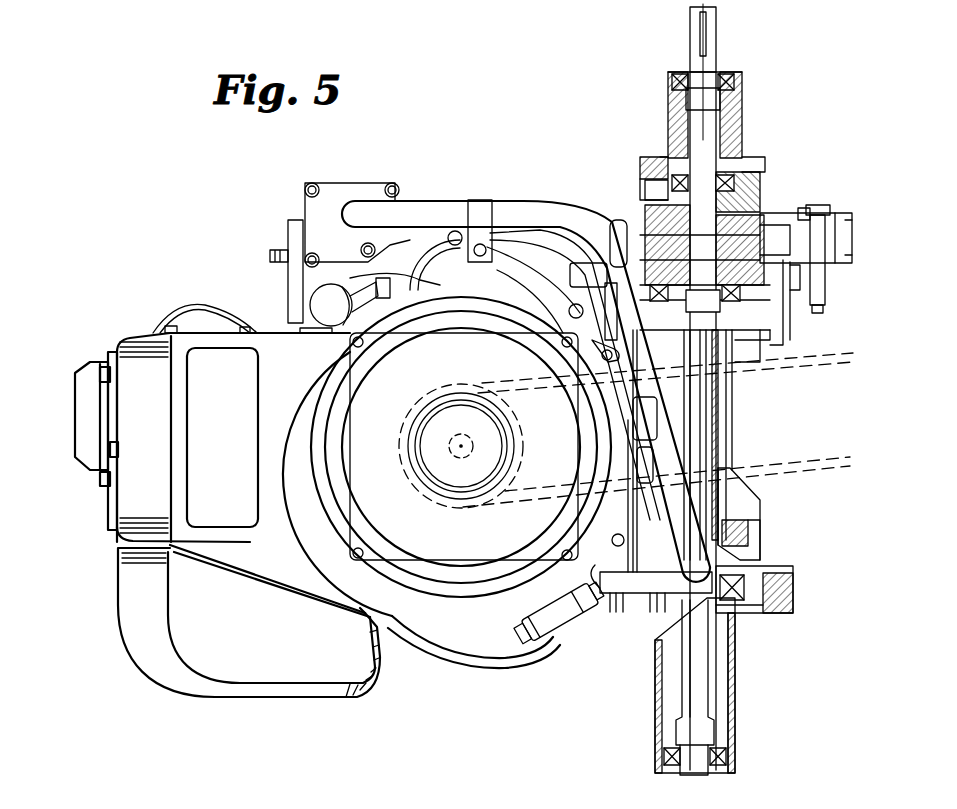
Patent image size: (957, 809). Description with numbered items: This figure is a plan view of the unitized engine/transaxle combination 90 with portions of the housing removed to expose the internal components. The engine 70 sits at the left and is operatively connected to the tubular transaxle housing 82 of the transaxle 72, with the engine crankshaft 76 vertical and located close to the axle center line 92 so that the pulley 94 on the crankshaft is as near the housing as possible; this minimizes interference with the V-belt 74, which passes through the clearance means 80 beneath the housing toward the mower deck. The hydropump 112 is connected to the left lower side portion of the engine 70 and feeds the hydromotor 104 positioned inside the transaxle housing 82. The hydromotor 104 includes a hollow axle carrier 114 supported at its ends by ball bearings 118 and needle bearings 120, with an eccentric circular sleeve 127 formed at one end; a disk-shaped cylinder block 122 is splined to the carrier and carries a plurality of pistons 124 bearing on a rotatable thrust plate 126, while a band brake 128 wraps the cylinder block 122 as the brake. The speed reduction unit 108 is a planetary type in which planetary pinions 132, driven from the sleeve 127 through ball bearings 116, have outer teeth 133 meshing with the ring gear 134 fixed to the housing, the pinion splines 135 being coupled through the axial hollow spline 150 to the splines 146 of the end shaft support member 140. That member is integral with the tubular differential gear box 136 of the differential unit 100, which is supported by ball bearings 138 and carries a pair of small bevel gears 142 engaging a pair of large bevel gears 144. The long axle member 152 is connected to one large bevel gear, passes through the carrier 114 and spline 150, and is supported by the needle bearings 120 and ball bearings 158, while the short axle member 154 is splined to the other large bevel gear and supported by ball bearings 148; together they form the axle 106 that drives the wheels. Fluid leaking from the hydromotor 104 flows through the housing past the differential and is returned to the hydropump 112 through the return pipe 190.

The engine/transaxle combination 90 is at (200, 232).
The engine 70 is at (183, 325).
The hydropump 112 is at (345, 183).
The transaxle 72 is at (582, 175).
The needle bearings 120 is at (598, 232).
The ball bearings 118 is at (665, 165).
The band brake 128 is at (648, 200).
The axle center line 92 is at (700, 10).
The axle 106 is at (680, 42).
The ball bearings 158 is at (722, 72).
The long axle member 152 is at (710, 135).
The thrust plate 126 is at (748, 200).
The pistons 124 is at (762, 232).
The hydromotor 104 is at (835, 196).
The ring gear 134 is at (795, 300).
The cylinder block 122 is at (805, 280).
The ball bearings 116 is at (765, 283).
The speed reduction unit 108 is at (790, 318).
The outer teeth 133 is at (770, 336).
The splines 135 is at (600, 344).
The planetary pinions 132 is at (770, 365).
The eccentric circular sleeve 127 is at (735, 393).
The engine crankshaft 76 is at (447, 443).
The pulley 94 is at (521, 437).
The hollow axle carrier 114 is at (730, 420).
The axial hollow spline 150 is at (740, 447).
The clearance means 80 is at (740, 457).
The V-belt 74 is at (856, 462).
The splines 146 is at (760, 480).
The end shaft support member 140 is at (755, 510).
The large bevel gears 144 is at (770, 525).
The differential gear box 136 is at (770, 548).
The small bevel gears 142 is at (790, 575).
The differential unit 100 is at (792, 602).
The ball bearings 138 is at (740, 652).
The return pipe 190 is at (690, 537).
The short axle member 154 is at (690, 688).
The transaxle housing 82 is at (738, 695).
The ball bearings 148 is at (738, 753).